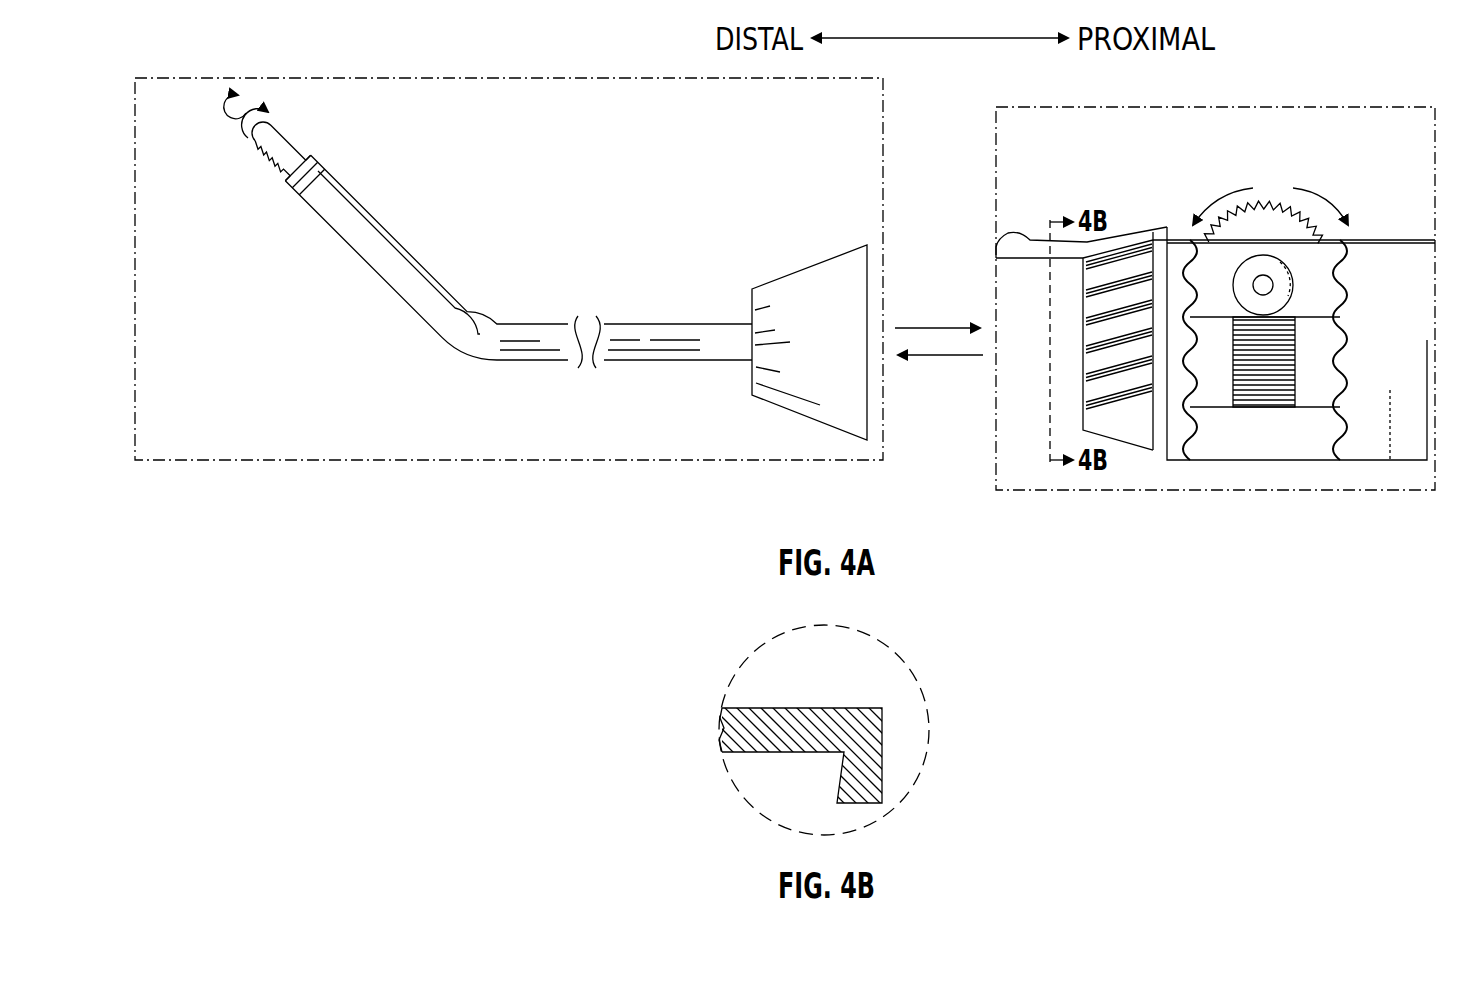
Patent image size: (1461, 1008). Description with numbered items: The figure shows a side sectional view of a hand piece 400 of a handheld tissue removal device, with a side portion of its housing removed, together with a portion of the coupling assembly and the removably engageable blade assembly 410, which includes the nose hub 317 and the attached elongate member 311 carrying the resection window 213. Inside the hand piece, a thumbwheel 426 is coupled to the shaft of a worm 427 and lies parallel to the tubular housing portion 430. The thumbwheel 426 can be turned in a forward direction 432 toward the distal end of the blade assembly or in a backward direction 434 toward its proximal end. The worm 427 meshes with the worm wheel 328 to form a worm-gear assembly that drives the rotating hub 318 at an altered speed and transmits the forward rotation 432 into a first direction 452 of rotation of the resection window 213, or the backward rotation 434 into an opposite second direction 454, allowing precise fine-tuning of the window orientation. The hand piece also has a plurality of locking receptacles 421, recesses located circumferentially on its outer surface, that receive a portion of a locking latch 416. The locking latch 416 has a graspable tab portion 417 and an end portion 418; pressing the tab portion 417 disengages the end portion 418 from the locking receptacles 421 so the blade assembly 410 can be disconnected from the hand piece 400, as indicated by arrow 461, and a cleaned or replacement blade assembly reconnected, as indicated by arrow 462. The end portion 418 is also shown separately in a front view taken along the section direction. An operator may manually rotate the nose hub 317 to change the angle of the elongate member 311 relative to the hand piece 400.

In FIG. 4A, the blade assembly 410 is at (207, 78).
In FIG. 4A, the second direction 454 is at (214, 118).
In FIG. 4A, the first direction 452 is at (243, 142).
In FIG. 4A, the resection window 213 is at (278, 152).
In FIG. 4A, the elongate member 311 is at (458, 300).
In FIG. 4A, the nose hub 317 is at (785, 275).
In FIG. 4A, the arrow 462 is at (933, 328).
In FIG. 4A, the arrow 461 is at (955, 355).
In FIG. 4A, the hand piece 400 is at (1062, 107).
In FIG. 4A, the locking latch 416 is at (1040, 228).
In FIG. 4A, the tab portion 417 is at (1015, 232).
In FIG. 4A, the forward direction 432 is at (1228, 192).
In FIG. 4A, the backward direction 434 is at (1320, 192).
In FIG. 4A, the tubular housing portion 430 is at (1425, 240).
In FIG. 4A, the thumbwheel 426 is at (1300, 228).
In FIG. 4A, the worm 427 is at (1293, 290).
In FIG. 4A, the locking receptacles 421 is at (1147, 418).
In FIG. 4A, the rotating hub 318 is at (1207, 390).
In FIG. 4A, the worm wheel 328 is at (1270, 390).
In FIG. 4B, the end portion 418 is at (800, 708).